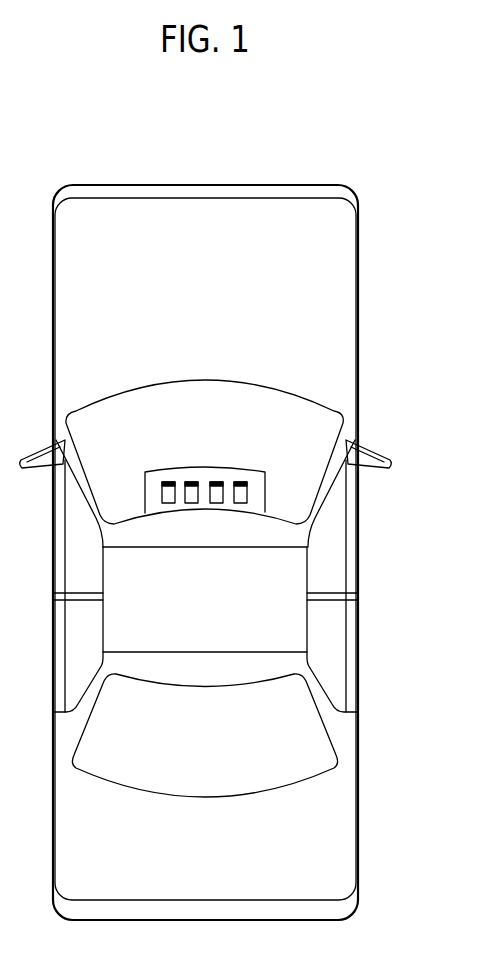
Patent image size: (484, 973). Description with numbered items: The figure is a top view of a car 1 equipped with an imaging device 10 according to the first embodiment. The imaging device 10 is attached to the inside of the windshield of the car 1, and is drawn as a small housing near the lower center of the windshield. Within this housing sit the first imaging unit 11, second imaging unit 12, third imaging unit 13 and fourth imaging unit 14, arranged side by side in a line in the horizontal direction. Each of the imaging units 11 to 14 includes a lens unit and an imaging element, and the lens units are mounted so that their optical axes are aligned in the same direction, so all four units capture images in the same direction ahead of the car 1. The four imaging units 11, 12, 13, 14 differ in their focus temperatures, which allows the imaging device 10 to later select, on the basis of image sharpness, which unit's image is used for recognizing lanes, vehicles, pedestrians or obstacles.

The car 1 is at (377, 153).
The imaging device 10 is at (263, 460).
The first imaging unit 11 is at (168, 481).
The second imaging unit 12 is at (193, 481).
The third imaging unit 13 is at (216, 481).
The fourth imaging unit 14 is at (243, 481).